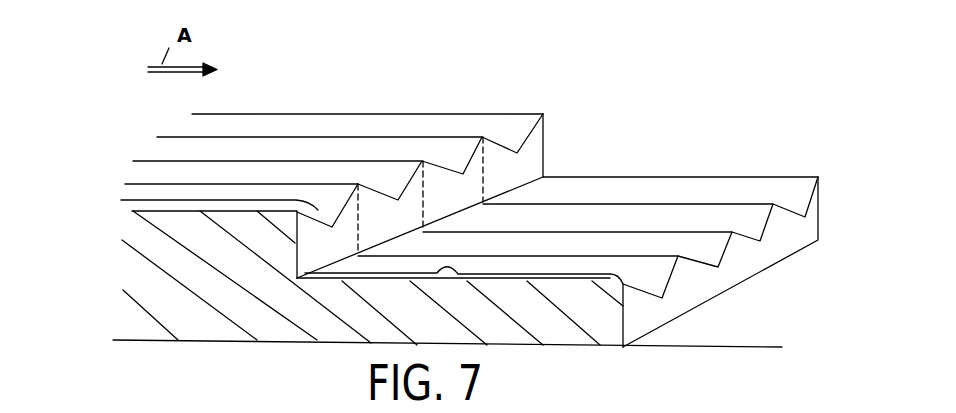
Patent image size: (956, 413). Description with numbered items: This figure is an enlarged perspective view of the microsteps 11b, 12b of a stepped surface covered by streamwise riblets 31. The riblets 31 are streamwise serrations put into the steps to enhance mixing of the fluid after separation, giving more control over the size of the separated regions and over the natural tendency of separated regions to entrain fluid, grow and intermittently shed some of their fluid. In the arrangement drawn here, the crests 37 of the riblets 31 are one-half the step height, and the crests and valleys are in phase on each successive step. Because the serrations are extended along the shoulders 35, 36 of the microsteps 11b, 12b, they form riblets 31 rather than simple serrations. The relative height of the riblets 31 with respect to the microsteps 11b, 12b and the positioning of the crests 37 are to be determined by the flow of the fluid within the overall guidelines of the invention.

The crests 37 is at (253, 113).
The microstep 12b is at (544, 115).
The microstep 11b is at (815, 178).
The riblets 31 is at (315, 198).
The shoulder 35 is at (121, 200).
The shoulder 36 is at (448, 267).